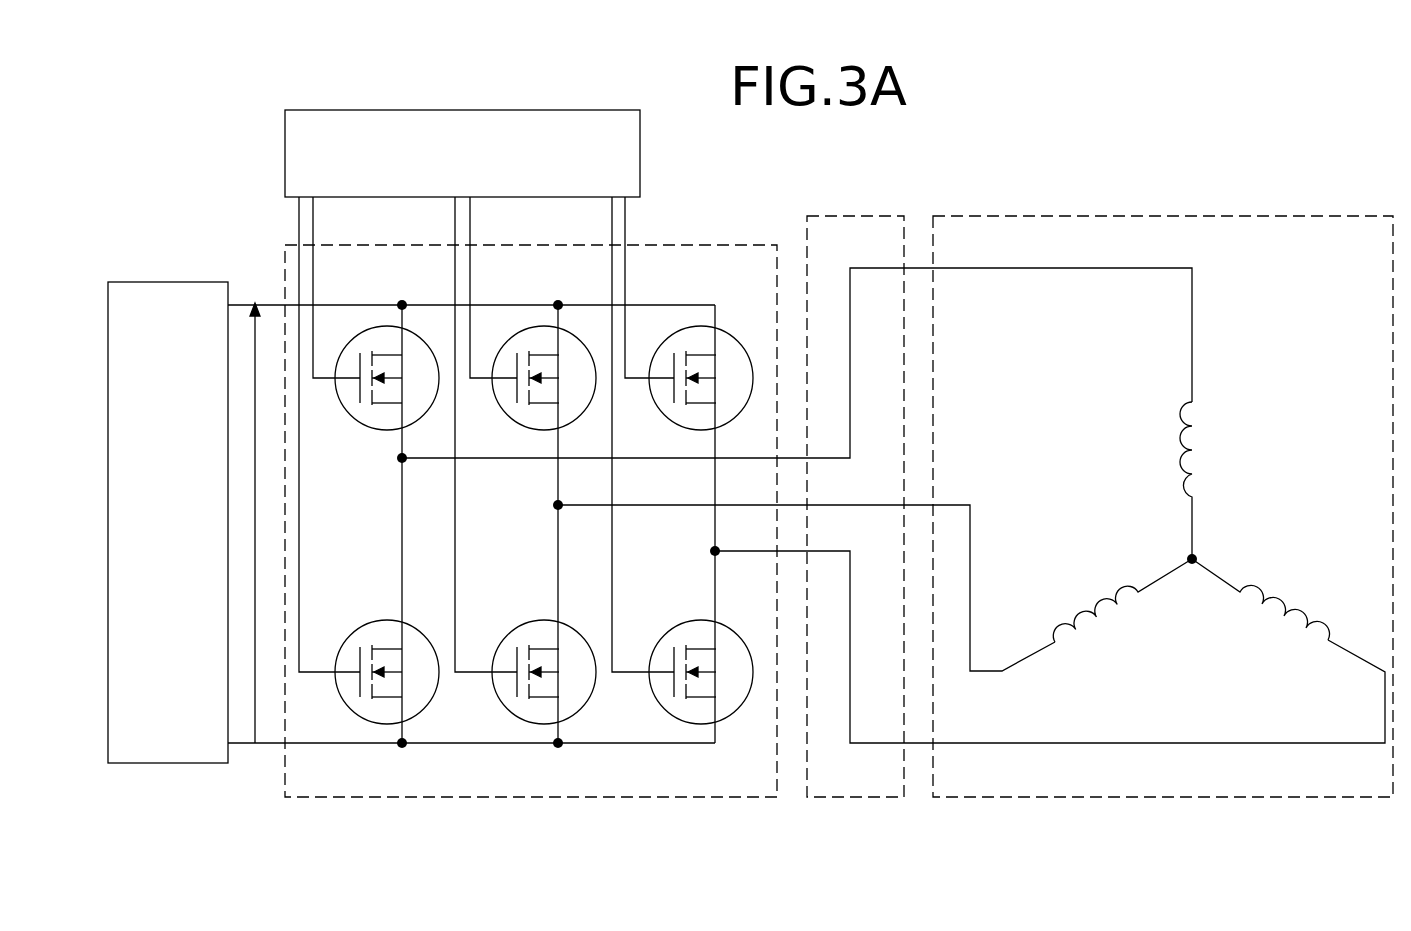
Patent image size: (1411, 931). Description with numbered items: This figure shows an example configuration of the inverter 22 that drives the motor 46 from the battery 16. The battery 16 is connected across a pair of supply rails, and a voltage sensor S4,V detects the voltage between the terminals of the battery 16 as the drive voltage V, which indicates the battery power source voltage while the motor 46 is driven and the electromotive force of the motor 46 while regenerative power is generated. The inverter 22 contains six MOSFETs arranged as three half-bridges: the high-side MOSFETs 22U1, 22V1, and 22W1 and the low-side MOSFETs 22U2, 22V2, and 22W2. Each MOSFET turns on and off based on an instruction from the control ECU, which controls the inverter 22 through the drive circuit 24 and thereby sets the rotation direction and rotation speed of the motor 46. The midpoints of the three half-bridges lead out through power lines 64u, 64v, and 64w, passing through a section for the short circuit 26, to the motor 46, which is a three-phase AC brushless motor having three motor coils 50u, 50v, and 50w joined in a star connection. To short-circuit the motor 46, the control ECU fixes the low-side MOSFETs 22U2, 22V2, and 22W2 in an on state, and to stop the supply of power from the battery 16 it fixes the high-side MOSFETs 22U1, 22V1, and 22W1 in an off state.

The battery 16 is at (171, 282).
The drive circuit 24 is at (478, 110).
The inverter 22 is at (755, 244).
The short circuit 26 is at (858, 215).
The motor 46 is at (1176, 215).
The MOSFET 22U1 is at (364, 432).
The MOSFET 22V1 is at (521, 432).
The MOSFET 22W1 is at (678, 432).
The MOSFET 22U2 is at (366, 621).
The MOSFET 22V2 is at (523, 621).
The MOSFET 22W2 is at (680, 621).
The power line 64u is at (1027, 268).
The power line 64v is at (975, 546).
The power line 64w is at (1175, 743).
The motor coil 50u is at (1181, 402).
The motor coil 50v is at (1059, 648).
The motor coil 50w is at (1334, 640).
The voltage sensor and drive voltage S4,V is at (257, 720).